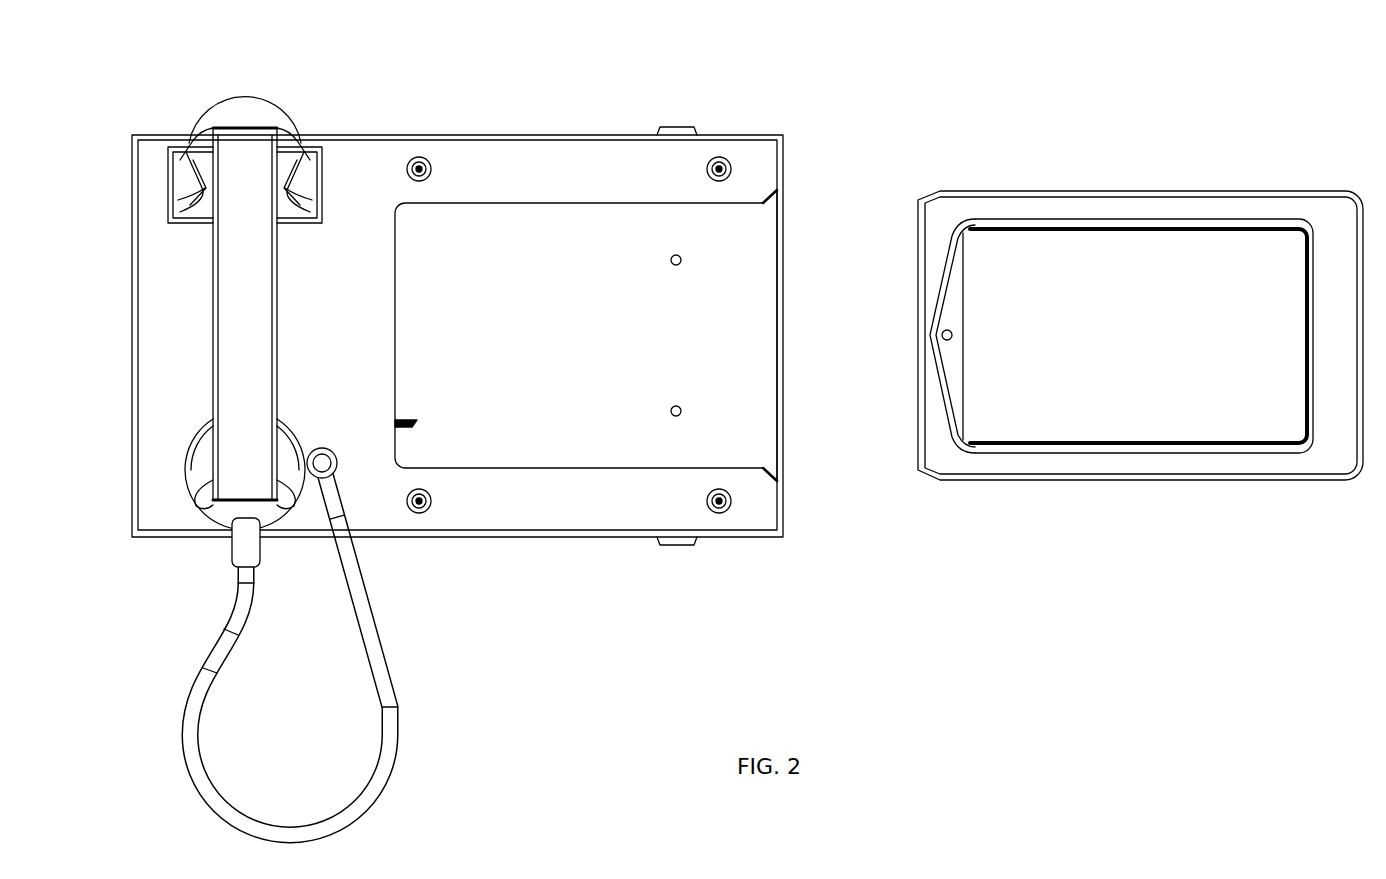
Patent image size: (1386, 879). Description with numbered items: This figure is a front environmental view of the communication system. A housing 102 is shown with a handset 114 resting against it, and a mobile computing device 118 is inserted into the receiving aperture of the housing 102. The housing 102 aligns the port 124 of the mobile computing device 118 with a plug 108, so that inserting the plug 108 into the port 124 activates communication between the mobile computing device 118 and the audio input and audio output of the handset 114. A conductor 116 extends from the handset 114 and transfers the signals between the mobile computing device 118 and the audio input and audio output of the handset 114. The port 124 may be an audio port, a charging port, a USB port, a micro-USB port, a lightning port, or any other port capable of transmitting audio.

The housing 102 is at (543, 137).
The plug 108 is at (415, 422).
The handset 114 is at (270, 110).
The conductor 116 is at (337, 470).
The mobile computing device 118 is at (1062, 357).
The port 124 is at (915, 447).